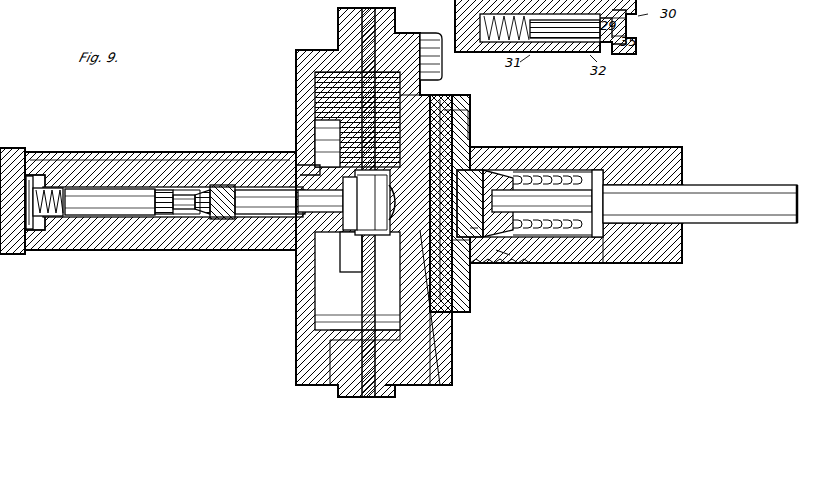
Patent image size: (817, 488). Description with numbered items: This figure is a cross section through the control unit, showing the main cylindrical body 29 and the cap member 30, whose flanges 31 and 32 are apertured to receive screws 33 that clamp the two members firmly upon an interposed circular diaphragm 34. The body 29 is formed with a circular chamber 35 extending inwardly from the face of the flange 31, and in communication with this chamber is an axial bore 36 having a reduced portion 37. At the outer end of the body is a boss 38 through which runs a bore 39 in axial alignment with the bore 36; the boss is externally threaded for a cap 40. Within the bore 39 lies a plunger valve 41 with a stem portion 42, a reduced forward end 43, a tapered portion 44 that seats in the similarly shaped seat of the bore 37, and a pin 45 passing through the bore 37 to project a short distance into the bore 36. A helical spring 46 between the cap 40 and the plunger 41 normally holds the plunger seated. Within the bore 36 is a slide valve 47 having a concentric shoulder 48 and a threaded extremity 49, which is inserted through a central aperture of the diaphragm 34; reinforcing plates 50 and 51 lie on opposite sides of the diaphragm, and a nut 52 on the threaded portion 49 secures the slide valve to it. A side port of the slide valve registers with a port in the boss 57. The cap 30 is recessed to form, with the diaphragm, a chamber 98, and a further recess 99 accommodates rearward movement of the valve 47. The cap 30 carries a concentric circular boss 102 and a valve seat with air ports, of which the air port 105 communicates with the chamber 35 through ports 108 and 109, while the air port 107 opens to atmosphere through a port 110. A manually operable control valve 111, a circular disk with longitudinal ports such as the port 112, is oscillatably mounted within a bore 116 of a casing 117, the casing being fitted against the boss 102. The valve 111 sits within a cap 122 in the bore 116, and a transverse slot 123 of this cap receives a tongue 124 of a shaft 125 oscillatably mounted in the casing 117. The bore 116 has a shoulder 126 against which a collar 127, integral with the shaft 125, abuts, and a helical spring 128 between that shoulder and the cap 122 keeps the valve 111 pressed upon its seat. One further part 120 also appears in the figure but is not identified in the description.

The main cylindrical body 29 is at (296, 50).
The cap member 30 is at (454, 366).
The flange 31 is at (338, 393).
The flange 32 is at (392, 395).
The screws 33 is at (442, 64).
The circular diaphragm 34 is at (320, 100).
The circular chamber 35 is at (330, 300).
The axial bore 36 is at (212, 232).
The reduced portion 37 is at (186, 214).
The boss 38 is at (100, 160).
The bore 39 is at (92, 250).
The cap 40 is at (12, 150).
The plunger valve 41 is at (100, 200).
The stem portion 42 is at (46, 190).
The reduced forward end 43 is at (162, 190).
The tapered portion 44 is at (182, 195).
The pin 45 is at (203, 212).
The helical spring 46 is at (36, 180).
The slide valve 47 is at (240, 192).
The concentric shoulder 48 is at (312, 212).
The threaded extremity 49 is at (350, 230).
The reinforcing plate 50 is at (318, 132).
The reinforcing plate 51 is at (428, 96).
The nut 52 is at (465, 122).
The boss 57 is at (297, 162).
The chamber 98 is at (428, 370).
The recess 99 is at (382, 272).
The circular boss 102 is at (472, 308).
The air port 105 is at (470, 295).
The air port 107 is at (505, 160).
The port 108 is at (452, 328).
The port 109 is at (335, 340).
The port 110 is at (452, 105).
The manually operable control valve 111 is at (512, 257).
The longitudinal port 112 is at (492, 268).
The bore 116 is at (455, 94).
The casing 117 is at (680, 150).
The plug 120 is at (540, 135).
The cap 122 is at (535, 155).
The transverse slot 123 is at (560, 240).
The tongue 124 is at (570, 165).
The shaft 125 is at (712, 192).
The shoulder 126 is at (630, 262).
The collar 127 is at (636, 150).
The helical spring 128 is at (598, 240).